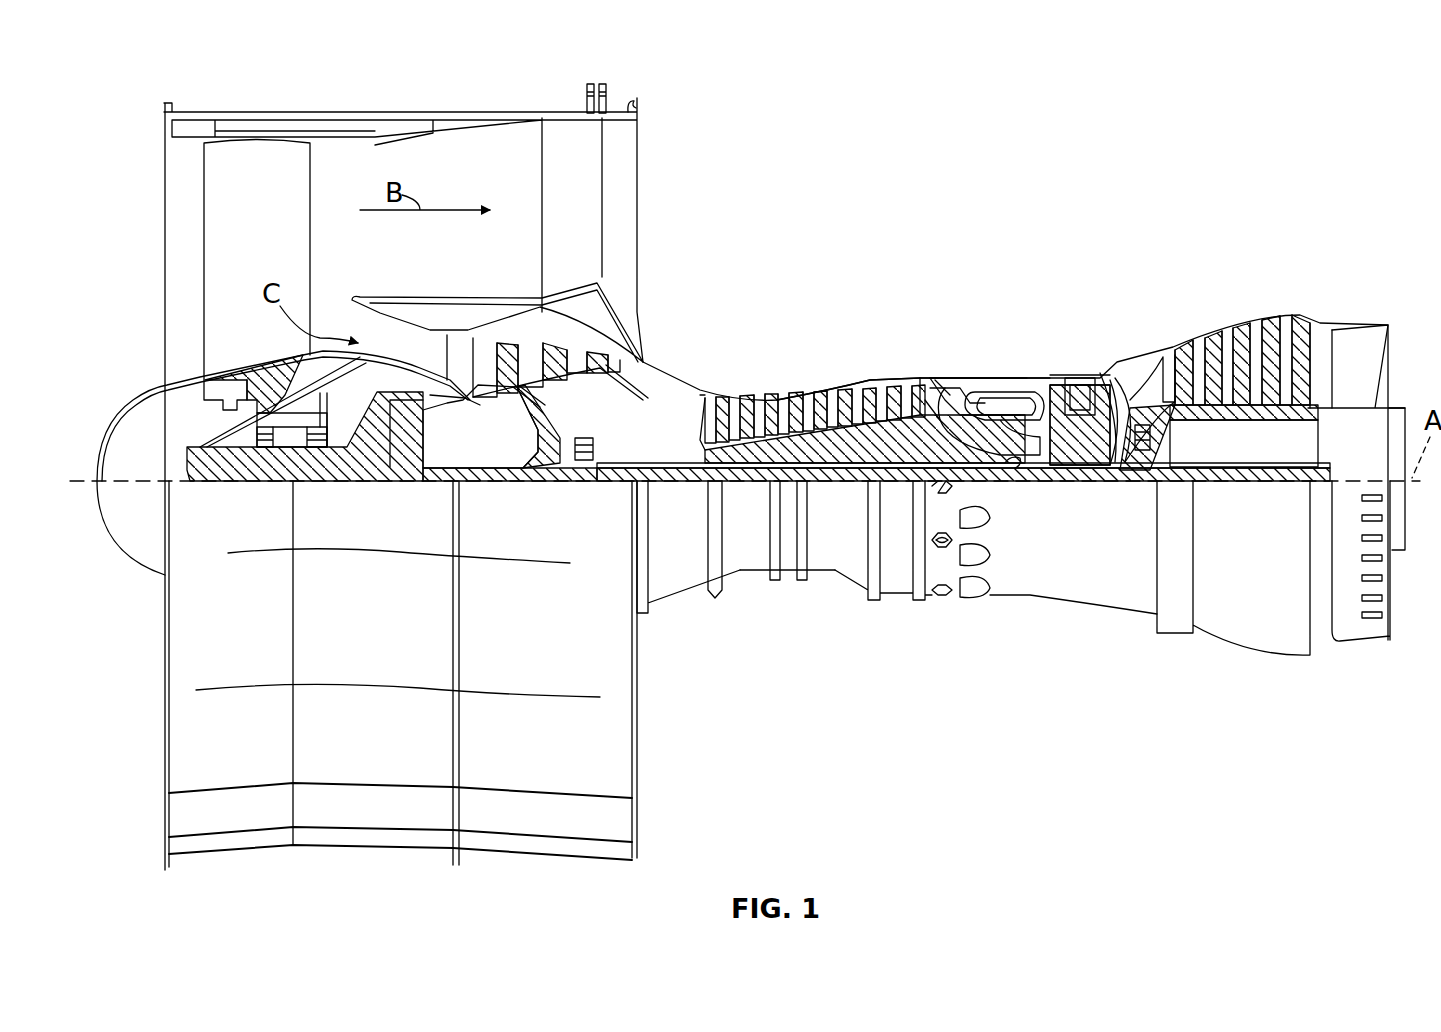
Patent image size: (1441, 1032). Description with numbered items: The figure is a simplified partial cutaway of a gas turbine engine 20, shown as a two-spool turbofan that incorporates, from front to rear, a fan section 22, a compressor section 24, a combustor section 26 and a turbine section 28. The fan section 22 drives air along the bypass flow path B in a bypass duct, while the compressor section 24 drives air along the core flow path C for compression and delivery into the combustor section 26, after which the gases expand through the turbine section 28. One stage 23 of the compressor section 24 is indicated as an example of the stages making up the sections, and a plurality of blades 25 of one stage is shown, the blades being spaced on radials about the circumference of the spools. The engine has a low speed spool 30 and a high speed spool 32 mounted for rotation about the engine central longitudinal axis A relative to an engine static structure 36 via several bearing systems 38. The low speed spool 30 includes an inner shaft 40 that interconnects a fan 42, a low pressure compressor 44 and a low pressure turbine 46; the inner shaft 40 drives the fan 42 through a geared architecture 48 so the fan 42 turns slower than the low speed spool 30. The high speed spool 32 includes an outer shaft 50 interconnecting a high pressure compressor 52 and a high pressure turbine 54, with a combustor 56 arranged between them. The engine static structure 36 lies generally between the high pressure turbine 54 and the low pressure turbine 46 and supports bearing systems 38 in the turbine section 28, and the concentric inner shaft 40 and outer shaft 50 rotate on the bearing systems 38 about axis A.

The gas turbine engine 20 is at (1215, 150).
The fan section 22 is at (272, 103).
The stage 23 is at (872, 362).
The compressor section 24 is at (830, 340).
The blades 25 is at (748, 382).
The combustor section 26 is at (995, 335).
The turbine section 28 is at (1142, 325).
The low speed spool 30 is at (858, 485).
The high speed spool 32 is at (928, 400).
The engine static structure 36 is at (898, 600).
The bearing systems 38 is at (268, 450).
The inner shaft 40 is at (652, 483).
The fan 42 is at (283, 241).
The low pressure compressor 44 is at (555, 355).
The low pressure turbine 46 is at (1238, 345).
The geared architecture 48 is at (398, 462).
The outer shaft 50 is at (1015, 468).
The high pressure compressor 52 is at (822, 442).
The high pressure turbine 54 is at (1078, 378).
The combustor 56 is at (1005, 400).